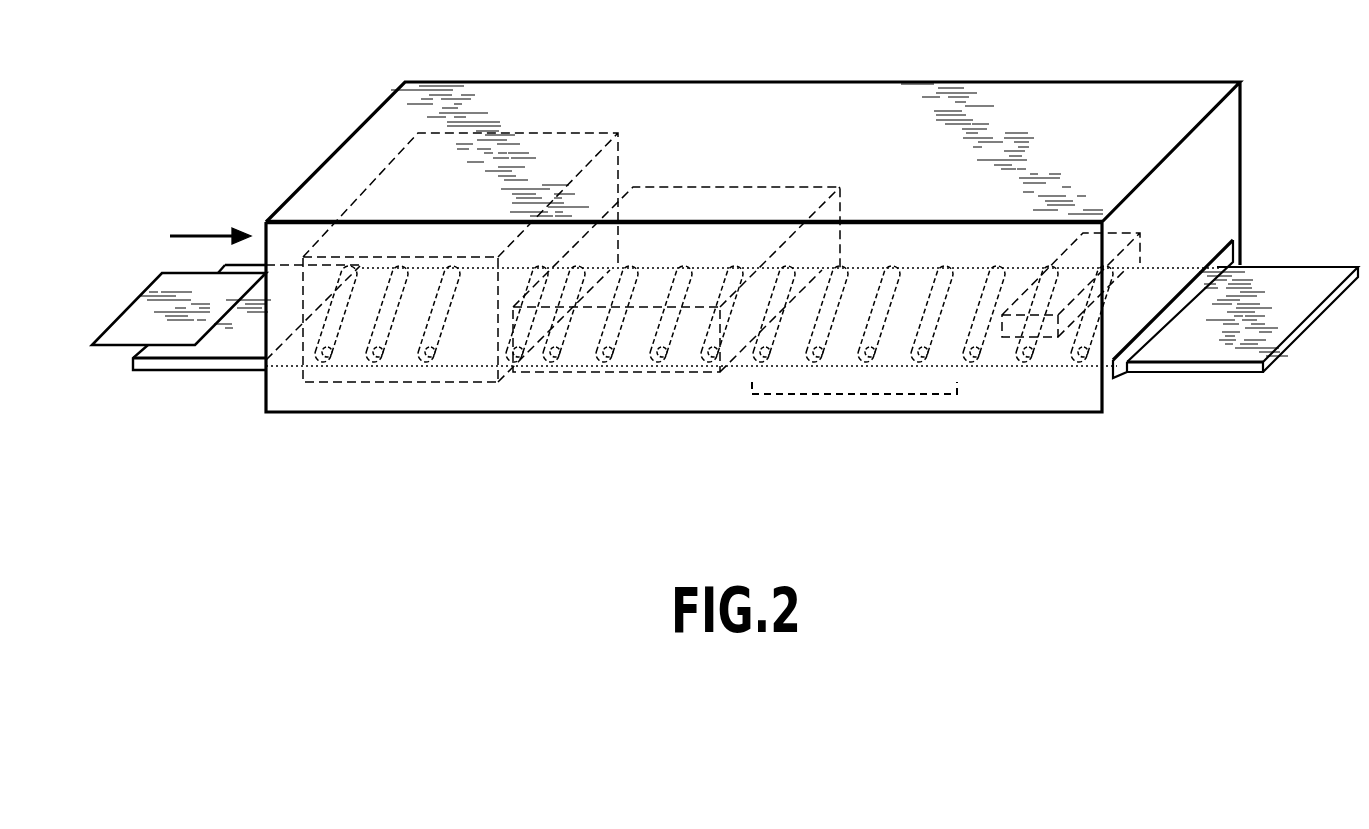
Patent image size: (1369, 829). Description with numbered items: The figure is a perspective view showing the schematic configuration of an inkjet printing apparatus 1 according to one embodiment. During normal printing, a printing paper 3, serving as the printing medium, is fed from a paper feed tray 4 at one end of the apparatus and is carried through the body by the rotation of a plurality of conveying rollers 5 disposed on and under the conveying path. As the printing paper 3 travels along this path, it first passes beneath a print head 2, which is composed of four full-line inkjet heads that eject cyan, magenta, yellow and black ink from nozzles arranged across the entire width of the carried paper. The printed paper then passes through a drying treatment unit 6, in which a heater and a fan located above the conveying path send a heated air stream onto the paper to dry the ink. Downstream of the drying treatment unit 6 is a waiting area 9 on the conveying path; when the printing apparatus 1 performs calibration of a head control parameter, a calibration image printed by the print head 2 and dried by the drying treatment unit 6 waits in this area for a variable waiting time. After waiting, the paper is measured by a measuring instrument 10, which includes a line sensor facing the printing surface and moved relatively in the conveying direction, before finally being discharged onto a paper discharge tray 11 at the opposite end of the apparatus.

The printing apparatus 1 is at (322, 426).
The print head 2 is at (590, 133).
The printing paper 3 is at (180, 307).
The paper feed tray 4 is at (203, 372).
The conveying rollers 5 is at (408, 362).
The drying treatment unit 6 is at (703, 187).
The waiting area 9 is at (790, 396).
The measuring instrument 10 is at (1104, 250).
The paper discharge tray 11 is at (1193, 374).